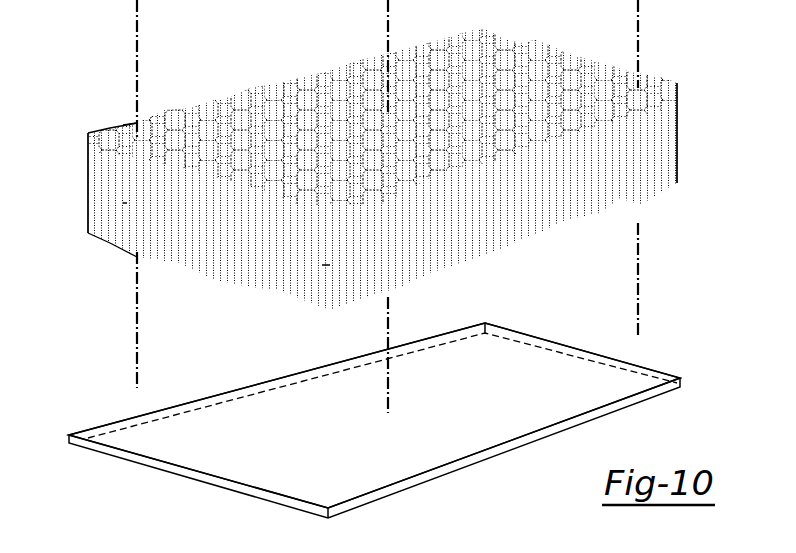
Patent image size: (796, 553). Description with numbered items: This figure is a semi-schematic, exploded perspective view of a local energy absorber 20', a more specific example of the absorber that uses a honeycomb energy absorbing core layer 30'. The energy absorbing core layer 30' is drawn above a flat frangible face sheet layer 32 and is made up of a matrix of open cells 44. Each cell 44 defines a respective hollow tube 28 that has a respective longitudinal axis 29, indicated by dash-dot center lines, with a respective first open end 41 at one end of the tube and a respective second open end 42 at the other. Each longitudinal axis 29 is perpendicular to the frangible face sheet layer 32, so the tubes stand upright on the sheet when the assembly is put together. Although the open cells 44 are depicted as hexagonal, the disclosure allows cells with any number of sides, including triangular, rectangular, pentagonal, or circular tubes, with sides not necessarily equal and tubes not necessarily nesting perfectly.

The local energy absorber 20' is at (340, 324).
The hollow tube 28 is at (238, 118).
The longitudinal axis 29 is at (137, 62).
The energy absorbing core layer 30' is at (705, 133).
The frangible face sheet layer 32 is at (686, 383).
The first open end 41 is at (120, 145).
The second open end 42 is at (120, 252).
The open cell 44 is at (512, 44).